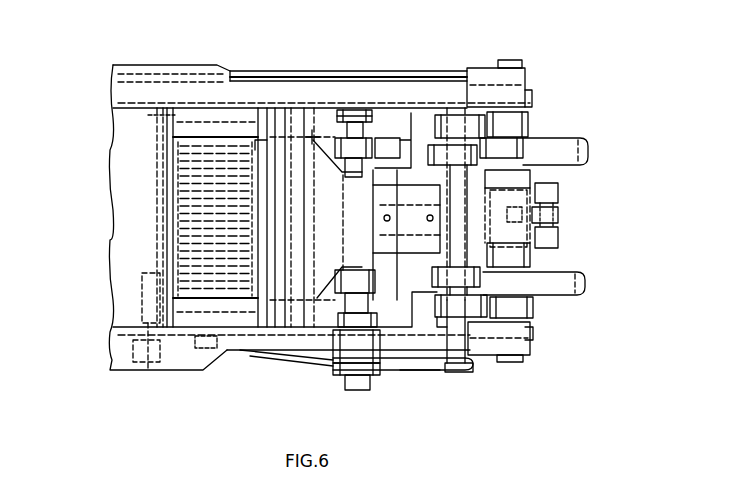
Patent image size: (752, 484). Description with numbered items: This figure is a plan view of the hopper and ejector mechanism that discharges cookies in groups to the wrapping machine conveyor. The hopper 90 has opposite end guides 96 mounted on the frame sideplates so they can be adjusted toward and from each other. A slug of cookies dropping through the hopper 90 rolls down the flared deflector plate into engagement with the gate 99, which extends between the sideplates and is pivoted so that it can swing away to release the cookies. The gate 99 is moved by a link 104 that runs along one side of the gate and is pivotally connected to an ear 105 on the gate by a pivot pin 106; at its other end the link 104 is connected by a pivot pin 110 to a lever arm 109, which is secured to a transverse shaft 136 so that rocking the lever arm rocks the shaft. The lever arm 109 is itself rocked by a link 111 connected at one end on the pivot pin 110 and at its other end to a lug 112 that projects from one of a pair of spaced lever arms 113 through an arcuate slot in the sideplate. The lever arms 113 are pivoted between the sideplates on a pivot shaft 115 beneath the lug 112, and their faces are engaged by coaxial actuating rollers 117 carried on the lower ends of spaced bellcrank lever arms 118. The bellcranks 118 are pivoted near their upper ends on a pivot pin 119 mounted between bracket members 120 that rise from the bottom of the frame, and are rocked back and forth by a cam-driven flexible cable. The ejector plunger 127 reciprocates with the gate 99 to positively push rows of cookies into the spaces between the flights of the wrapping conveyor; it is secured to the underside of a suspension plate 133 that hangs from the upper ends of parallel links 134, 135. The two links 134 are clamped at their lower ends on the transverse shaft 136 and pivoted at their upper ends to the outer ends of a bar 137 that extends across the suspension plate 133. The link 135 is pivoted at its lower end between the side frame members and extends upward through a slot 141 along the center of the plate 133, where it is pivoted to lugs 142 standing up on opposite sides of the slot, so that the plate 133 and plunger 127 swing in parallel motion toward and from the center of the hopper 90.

The hopper 90 is at (233, 148).
The end guides 96 is at (188, 123).
The gate 99 is at (162, 190).
The link 104 is at (290, 360).
The ear 105 is at (143, 278).
The pivot pin 106 is at (156, 367).
The lever arm 109 is at (335, 377).
The pivot pin 110 is at (360, 390).
The link 111 is at (418, 372).
The lug 112 is at (445, 360).
The lever arms 113 is at (453, 120).
The pivot shaft 115 is at (438, 160).
The actuating rollers 117 is at (532, 122).
The lever arms 118 is at (562, 138).
The pivot pin 119 is at (510, 60).
The bracket members 120 is at (480, 77).
The ejector plunger 127 is at (312, 137).
The suspension plate 133 is at (520, 181).
The parallel links 134 is at (335, 138).
The link 135 is at (562, 218).
The transverse shaft 136 is at (367, 130).
The bar 137 is at (377, 220).
The slot 141 is at (560, 212).
The lugs 142 is at (555, 193).